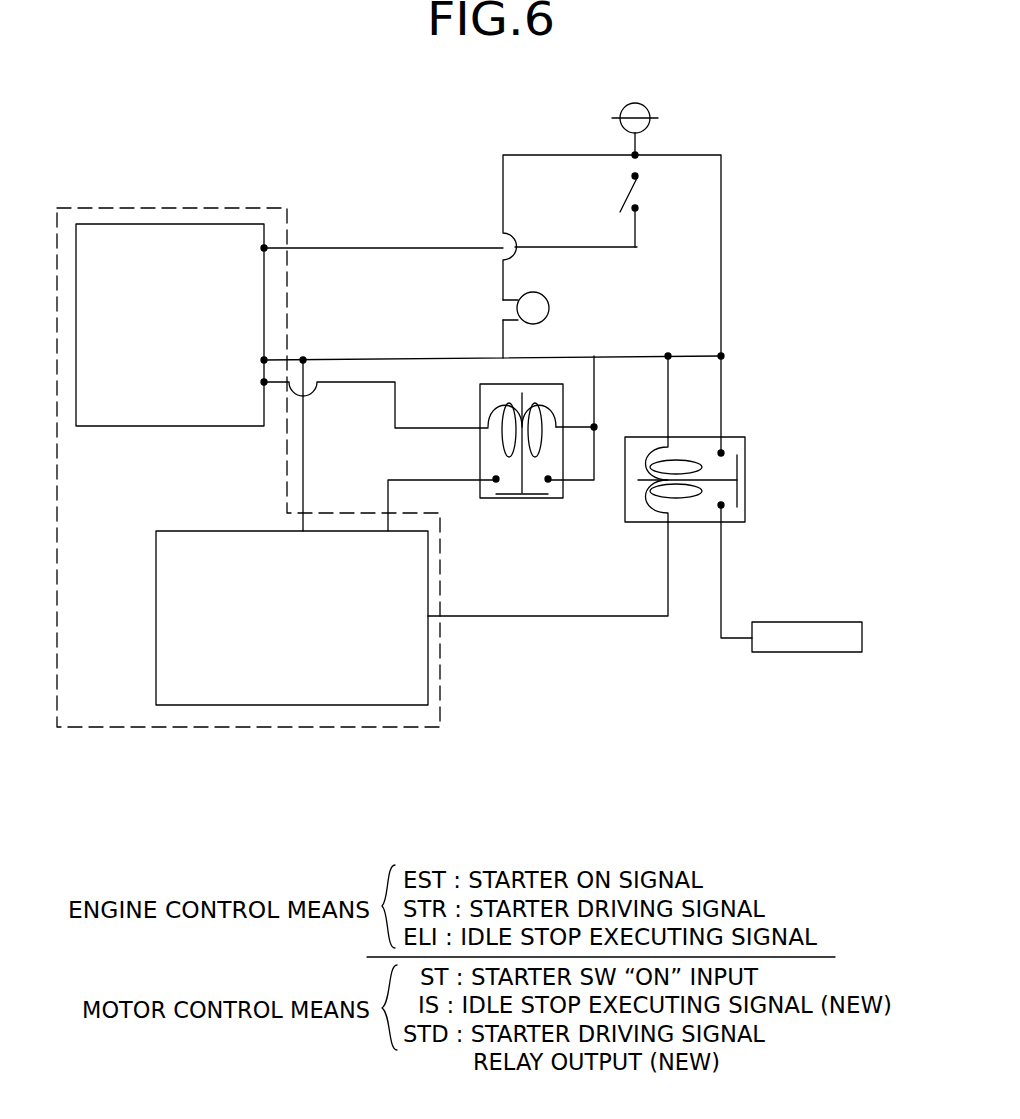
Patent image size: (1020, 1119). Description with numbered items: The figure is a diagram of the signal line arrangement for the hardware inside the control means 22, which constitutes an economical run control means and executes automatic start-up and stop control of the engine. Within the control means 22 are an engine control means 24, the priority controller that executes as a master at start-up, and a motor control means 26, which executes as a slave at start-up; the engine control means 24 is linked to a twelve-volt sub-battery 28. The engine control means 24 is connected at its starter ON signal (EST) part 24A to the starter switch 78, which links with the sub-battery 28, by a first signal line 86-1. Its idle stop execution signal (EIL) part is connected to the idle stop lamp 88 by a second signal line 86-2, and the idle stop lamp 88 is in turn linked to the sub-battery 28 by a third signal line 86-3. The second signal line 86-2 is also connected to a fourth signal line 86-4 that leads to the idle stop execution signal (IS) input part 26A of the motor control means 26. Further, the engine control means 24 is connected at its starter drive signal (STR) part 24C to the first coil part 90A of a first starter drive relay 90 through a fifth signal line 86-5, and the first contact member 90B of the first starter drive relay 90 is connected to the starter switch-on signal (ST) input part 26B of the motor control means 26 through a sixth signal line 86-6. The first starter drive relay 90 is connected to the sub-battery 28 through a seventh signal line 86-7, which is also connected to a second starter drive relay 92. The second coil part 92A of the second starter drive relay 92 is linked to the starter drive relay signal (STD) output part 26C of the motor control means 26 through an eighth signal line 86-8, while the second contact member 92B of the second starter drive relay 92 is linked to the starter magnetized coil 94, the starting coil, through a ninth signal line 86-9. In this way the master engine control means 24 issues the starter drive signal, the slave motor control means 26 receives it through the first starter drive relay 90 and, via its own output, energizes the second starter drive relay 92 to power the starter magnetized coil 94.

The control means 22 is at (167, 200).
The engine control means 24 is at (107, 215).
The starter ON signal (EST) part 24A is at (264, 246).
The starter drive signal (STR) part 24C is at (265, 385).
The motor control means 26 is at (335, 640).
The idle stop execution signal (IS) input part 26A is at (300, 528).
The starter switch-on signal (ST) input part 26B is at (398, 520).
The starter drive relay signal (STD) output part 26C is at (430, 619).
The sub-battery 28 is at (647, 107).
The starter switch 78 is at (636, 196).
The first signal line 86-1 is at (388, 246).
The second signal line 86-2 is at (388, 358).
The third signal line 86-3 is at (545, 156).
The fourth signal line 86-4 is at (305, 467).
The fifth signal line 86-5 is at (450, 427).
The sixth signal line 86-6 is at (440, 479).
The seventh signal line 86-7 is at (722, 258).
The eighth signal line 86-8 is at (599, 617).
The ninth signal line 86-9 is at (720, 600).
The idle stop lamp 88 is at (539, 293).
The first starter drive relay 90 is at (540, 464).
The first coil part 90A is at (535, 398).
The first contact member 90B is at (538, 525).
The second starter drive relay 92 is at (698, 466).
The second coil part 92A is at (637, 446).
The second contact member 92B is at (731, 514).
The starter magnetized coil 94 is at (813, 621).